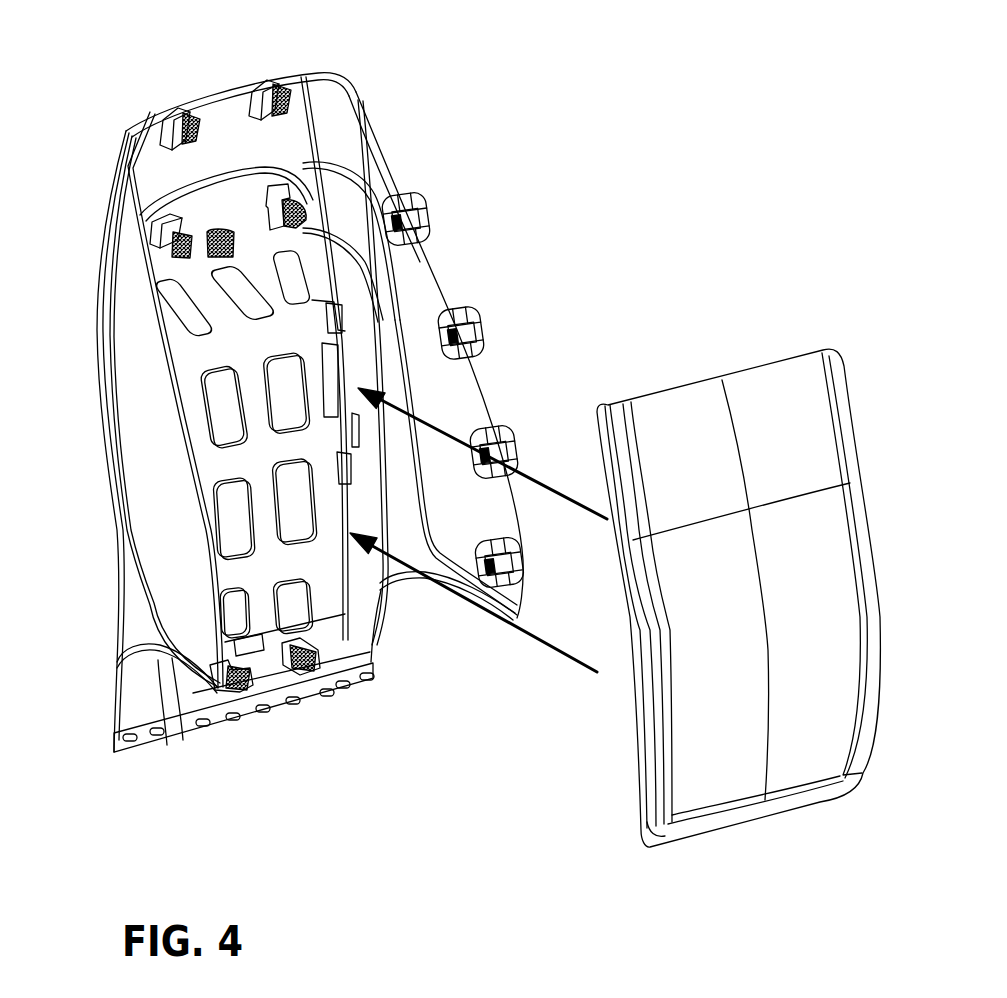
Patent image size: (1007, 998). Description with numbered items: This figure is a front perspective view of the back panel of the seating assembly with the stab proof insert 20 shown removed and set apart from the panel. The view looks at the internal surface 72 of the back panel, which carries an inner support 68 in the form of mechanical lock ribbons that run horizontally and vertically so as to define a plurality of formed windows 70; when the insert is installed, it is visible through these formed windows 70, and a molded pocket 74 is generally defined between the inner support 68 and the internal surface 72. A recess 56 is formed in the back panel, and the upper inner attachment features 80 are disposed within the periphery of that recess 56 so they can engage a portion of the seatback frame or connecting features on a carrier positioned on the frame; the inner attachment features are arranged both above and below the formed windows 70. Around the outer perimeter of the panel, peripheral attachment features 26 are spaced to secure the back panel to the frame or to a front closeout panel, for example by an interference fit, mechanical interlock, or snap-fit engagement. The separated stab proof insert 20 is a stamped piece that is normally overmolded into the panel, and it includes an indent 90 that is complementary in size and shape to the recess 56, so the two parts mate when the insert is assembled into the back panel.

The stab proof insert 20 is at (290, 457).
The peripheral attachment features 26 is at (428, 212).
The recess 56 is at (220, 212).
The inner support 68 is at (243, 570).
The formed windows 70 is at (283, 368).
The internal surface 72 is at (197, 272).
The molded pocket 74 is at (290, 607).
The upper inner attachment features 80 is at (160, 250).
The indent 90 is at (673, 817).